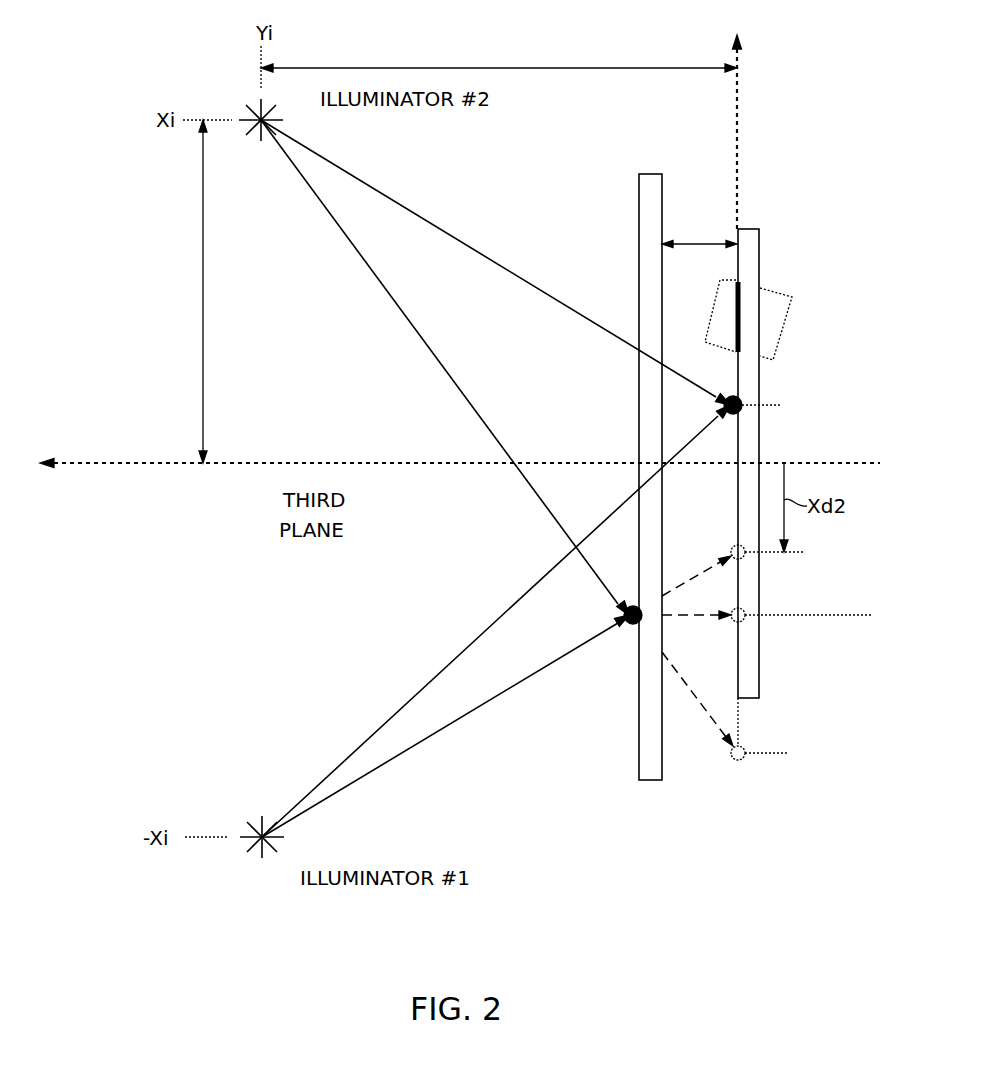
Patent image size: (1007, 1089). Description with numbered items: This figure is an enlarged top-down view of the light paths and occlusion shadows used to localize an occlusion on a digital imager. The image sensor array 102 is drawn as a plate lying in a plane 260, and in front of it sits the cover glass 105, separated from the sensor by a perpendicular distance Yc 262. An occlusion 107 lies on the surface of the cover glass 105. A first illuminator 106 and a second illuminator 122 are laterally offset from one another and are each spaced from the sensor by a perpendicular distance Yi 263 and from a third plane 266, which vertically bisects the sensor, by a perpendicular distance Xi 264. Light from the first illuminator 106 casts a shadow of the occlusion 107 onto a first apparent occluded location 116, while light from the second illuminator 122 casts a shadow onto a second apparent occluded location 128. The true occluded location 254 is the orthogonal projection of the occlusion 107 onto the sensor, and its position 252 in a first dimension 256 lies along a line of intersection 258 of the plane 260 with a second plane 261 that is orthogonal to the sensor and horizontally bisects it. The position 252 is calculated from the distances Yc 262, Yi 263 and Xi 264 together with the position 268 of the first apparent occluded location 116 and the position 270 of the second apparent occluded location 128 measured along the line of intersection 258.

The image sensor array 102 is at (760, 250).
The cover glass 105 is at (639, 190).
The first illuminator 106 is at (258, 850).
The occlusion 107 is at (624, 612).
The first apparent occluded location 116 is at (732, 545).
The second illuminator 122 is at (252, 114).
The second apparent occluded location 128 is at (735, 762).
The position of the occluded location 252 is at (800, 620).
The occluded location 254 is at (735, 630).
The first dimension 256 is at (770, 76).
The line of intersection 258 is at (735, 305).
The plane of the ISA 260 is at (737, 145).
The second plane 261 is at (792, 300).
The perpendicular distance Yc 262 is at (681, 240).
The perpendicular distance Yi 263 is at (535, 66).
The perpendicular distance Xi 264 is at (203, 285).
The third plane 266 is at (122, 467).
The position of the first apparent occluded location 268 is at (795, 555).
The position of the second apparent occluded location 270 is at (775, 760).